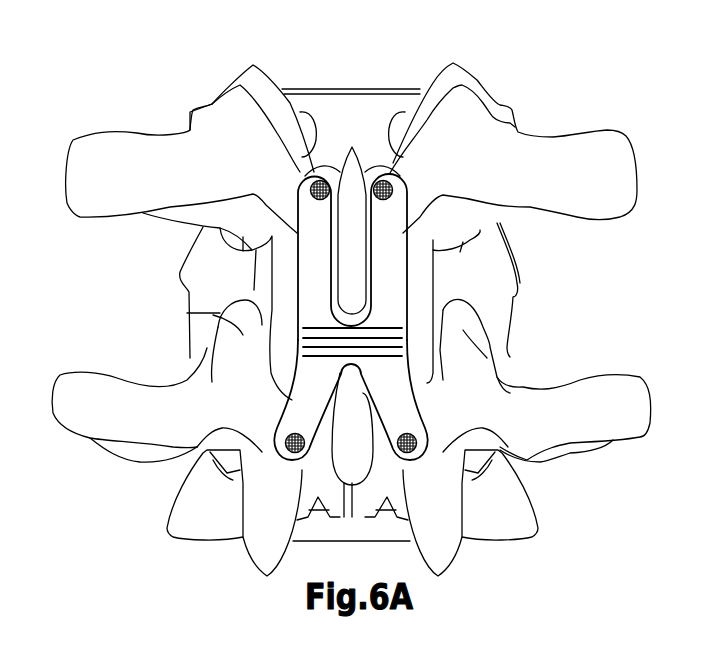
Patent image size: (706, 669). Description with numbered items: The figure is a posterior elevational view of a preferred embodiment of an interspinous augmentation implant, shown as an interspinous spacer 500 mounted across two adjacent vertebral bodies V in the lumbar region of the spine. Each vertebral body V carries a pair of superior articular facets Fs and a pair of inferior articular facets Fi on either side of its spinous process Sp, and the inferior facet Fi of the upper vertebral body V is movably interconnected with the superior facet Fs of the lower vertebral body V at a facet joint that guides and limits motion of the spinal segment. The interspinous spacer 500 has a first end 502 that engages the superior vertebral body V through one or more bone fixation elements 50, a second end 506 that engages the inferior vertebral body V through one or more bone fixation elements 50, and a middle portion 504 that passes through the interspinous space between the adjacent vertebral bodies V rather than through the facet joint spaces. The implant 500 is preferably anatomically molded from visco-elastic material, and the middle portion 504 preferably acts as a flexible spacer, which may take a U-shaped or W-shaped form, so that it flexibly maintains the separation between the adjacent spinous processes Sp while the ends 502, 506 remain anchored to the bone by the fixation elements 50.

The bone fixation element 50 is at (310, 188).
The interspinous spacer 500 is at (389, 315).
The first end 502 is at (321, 181).
The middle portion 504 is at (355, 340).
The second end 506 is at (280, 446).
The vertebral body V is at (580, 175).
The spinous process Sp is at (352, 222).
The inferior articular facet Fi is at (287, 327).
The superior articular facet Fs is at (240, 361).